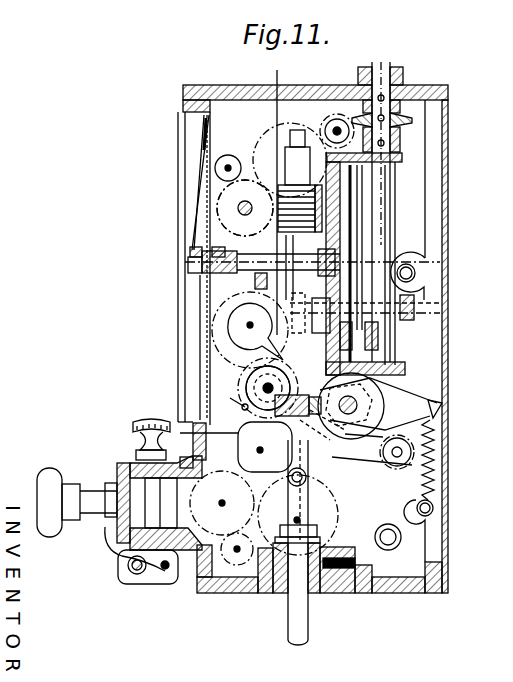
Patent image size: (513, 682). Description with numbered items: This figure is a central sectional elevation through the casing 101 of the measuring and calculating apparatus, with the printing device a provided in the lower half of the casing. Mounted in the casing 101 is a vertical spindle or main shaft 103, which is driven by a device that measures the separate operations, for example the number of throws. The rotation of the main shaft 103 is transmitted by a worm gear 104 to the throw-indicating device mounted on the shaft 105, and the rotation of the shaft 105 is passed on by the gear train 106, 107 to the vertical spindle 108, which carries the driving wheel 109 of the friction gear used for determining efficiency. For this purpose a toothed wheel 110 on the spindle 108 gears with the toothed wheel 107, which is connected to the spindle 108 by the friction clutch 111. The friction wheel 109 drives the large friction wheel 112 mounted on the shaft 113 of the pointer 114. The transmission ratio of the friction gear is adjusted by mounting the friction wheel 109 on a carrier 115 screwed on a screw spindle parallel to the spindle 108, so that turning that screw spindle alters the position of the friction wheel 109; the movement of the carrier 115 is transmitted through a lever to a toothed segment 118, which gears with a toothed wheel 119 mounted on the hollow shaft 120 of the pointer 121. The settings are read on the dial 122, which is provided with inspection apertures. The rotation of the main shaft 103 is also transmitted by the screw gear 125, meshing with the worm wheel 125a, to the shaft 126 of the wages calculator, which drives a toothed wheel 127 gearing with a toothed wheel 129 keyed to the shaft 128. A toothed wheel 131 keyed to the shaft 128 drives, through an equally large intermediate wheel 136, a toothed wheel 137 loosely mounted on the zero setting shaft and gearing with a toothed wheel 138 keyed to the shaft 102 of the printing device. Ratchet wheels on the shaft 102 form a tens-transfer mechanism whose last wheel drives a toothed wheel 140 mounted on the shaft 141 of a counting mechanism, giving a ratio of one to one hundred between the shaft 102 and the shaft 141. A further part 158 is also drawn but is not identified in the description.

The casing 101 is at (431, 593).
The shaft 102 is at (220, 505).
The main shaft 103 is at (303, 631).
The worm gear 104 is at (271, 194).
The shaft 105 is at (238, 207).
The gear train wheel 106 is at (259, 143).
The toothed wheel 107 is at (326, 118).
The vertical spindle 108 is at (385, 220).
The friction wheel 109 is at (378, 368).
The toothed wheel 110 is at (405, 124).
The friction clutch 111 is at (398, 108).
The large friction wheel 112 is at (358, 240).
The shaft 113 is at (188, 262).
The pointer 114 is at (198, 160).
The carrier 115 is at (352, 347).
The toothed segment 118 is at (418, 273).
The toothed wheel 119 is at (338, 225).
The hollow shaft 120 is at (240, 253).
The pointer 121 is at (205, 135).
The dial 122 is at (200, 300).
The screw gear 125 is at (318, 397).
The worm wheel 125a is at (438, 406).
The shaft 126 is at (360, 410).
The toothed wheel 127 is at (412, 445).
The shaft 128 is at (262, 366).
The toothed wheel 129 is at (262, 383).
The toothed wheel 131 is at (243, 370).
The intermediate wheel 136 is at (242, 405).
The toothed wheel 137 is at (237, 427).
The toothed wheel 138 is at (150, 461).
The toothed wheel 140 is at (340, 518).
The shaft 141 is at (272, 590).
The worm 158 is at (320, 402).
The printing device a is at (42, 480).